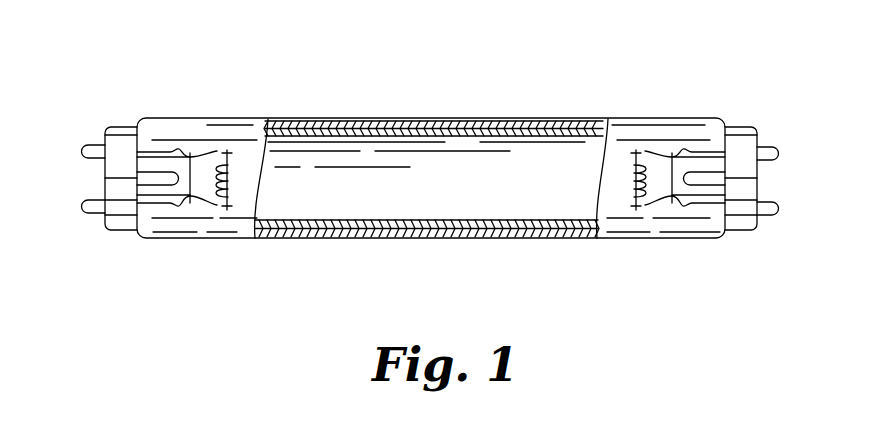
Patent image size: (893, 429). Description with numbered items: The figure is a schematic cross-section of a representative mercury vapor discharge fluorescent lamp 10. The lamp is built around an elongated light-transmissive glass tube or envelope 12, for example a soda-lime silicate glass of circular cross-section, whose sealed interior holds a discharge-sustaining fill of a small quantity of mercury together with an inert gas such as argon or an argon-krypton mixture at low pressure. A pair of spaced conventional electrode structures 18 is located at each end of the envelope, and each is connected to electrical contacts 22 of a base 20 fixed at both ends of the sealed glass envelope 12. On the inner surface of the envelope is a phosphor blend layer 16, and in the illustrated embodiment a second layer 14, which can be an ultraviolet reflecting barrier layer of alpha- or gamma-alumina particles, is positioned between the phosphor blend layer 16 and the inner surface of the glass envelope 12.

The mercury vapor discharge fluorescent lamp 10 is at (207, 53).
The glass tube or envelope 12 is at (368, 118).
The second layer 14 is at (467, 120).
The phosphor blend layer 16 is at (550, 133).
The electrode structures 18 is at (230, 178).
The base 20 is at (123, 232).
The electrical contacts 22 is at (92, 146).